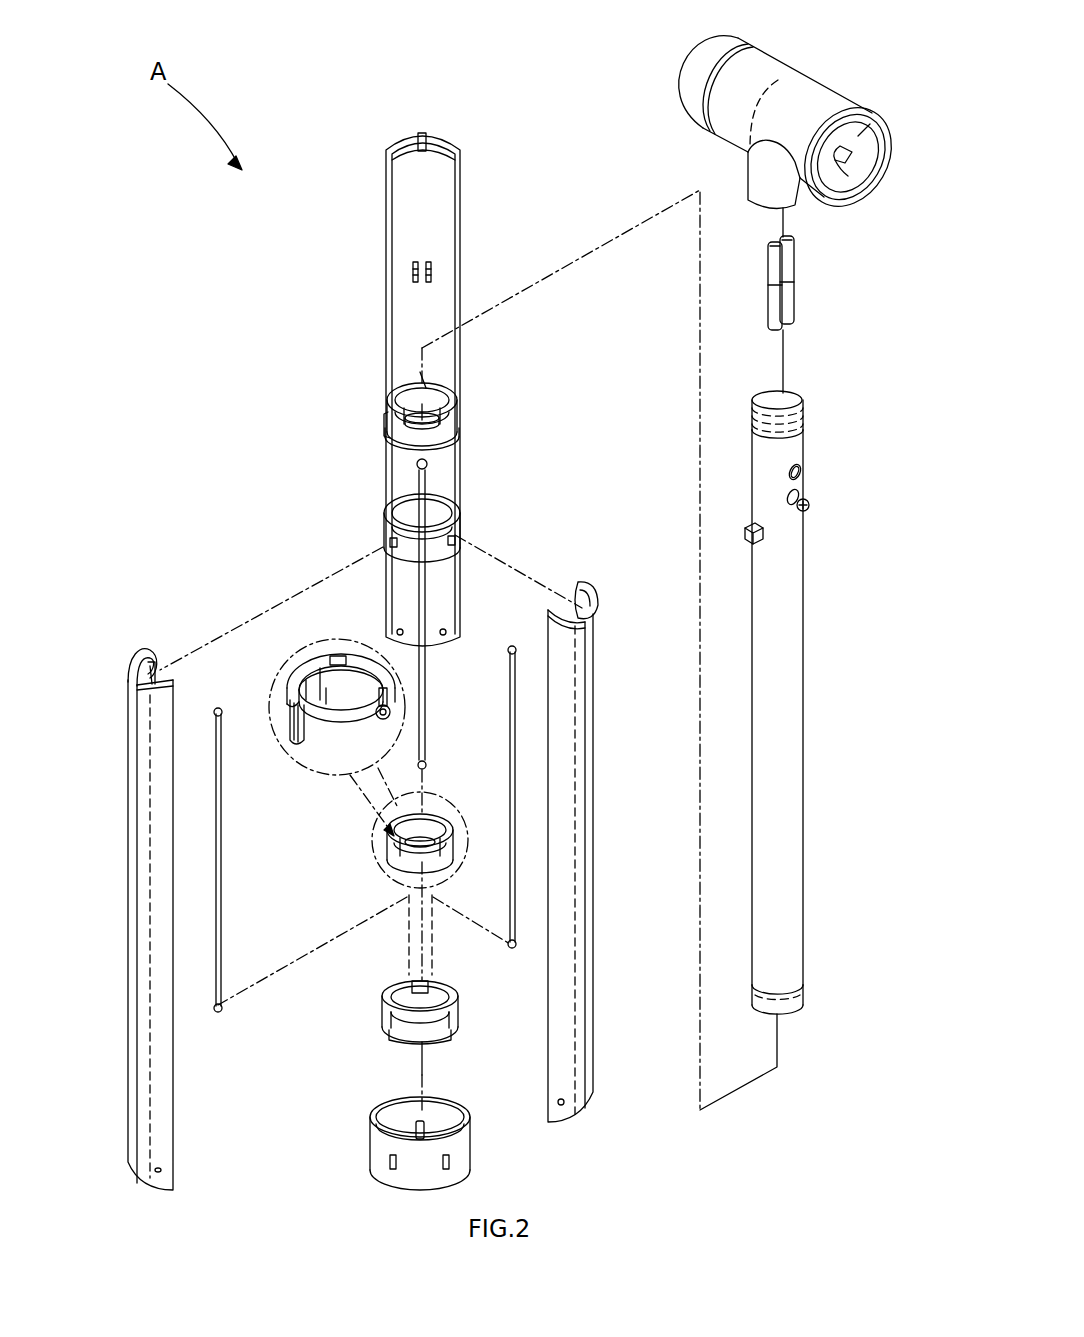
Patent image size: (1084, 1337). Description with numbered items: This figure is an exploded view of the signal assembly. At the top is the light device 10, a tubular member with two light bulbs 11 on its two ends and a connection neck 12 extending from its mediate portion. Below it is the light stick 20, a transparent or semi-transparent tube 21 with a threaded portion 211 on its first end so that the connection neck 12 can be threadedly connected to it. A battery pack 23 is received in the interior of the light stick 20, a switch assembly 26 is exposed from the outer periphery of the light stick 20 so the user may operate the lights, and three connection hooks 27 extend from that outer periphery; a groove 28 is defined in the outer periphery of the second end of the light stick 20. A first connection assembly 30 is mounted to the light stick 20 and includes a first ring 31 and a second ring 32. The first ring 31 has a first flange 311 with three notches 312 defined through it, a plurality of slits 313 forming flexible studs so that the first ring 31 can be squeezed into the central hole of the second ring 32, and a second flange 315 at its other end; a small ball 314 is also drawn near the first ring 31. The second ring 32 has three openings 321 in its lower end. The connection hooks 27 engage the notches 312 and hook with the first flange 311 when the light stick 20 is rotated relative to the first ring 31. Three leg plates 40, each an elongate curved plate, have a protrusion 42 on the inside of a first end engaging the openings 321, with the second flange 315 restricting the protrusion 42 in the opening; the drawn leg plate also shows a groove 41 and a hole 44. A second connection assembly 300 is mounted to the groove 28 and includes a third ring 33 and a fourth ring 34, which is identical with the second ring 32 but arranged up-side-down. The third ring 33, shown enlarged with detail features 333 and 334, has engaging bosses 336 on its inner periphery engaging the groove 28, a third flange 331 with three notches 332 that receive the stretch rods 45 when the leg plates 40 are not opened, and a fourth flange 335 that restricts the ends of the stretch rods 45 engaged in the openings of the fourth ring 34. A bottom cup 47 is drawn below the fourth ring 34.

The light device 10 is at (826, 64).
The light bulbs 11 is at (880, 128).
The connection neck 12 is at (798, 192).
The light stick 20 is at (826, 702).
The tube 21 is at (790, 814).
The threaded portion 211 is at (805, 412).
The battery pack 23 is at (815, 290).
The switch assembly 26 is at (800, 474).
The connection hooks 27 is at (756, 536).
The groove 28 is at (800, 996).
The first connection assembly 30 is at (378, 382).
The first ring 31 is at (388, 404).
The first flange 311 is at (458, 398).
The notches 312 is at (440, 372).
The slits 313 is at (456, 432).
The ball 314 is at (432, 440).
The second flange 315 is at (386, 432).
The second ring 32 is at (385, 522).
The openings 321 is at (392, 538).
The third ring 33 is at (300, 778).
The third flange 331 is at (298, 684).
The notches 332 is at (338, 654).
The rib 333 is at (320, 666).
The inner wall 334 is at (320, 692).
The fourth flange 335 is at (294, 746).
The engaging bosses 336 is at (372, 706).
The fourth ring 34 is at (384, 1020).
The second connection assembly 300 is at (478, 997).
The leg plates 40 is at (606, 770).
The groove of half shell 41 is at (588, 940).
The protrusion 42 is at (585, 594).
The hole at bottom of shell 44 is at (563, 1106).
The stretch rods 45 is at (222, 990).
The bottom cup 47 is at (378, 1148).